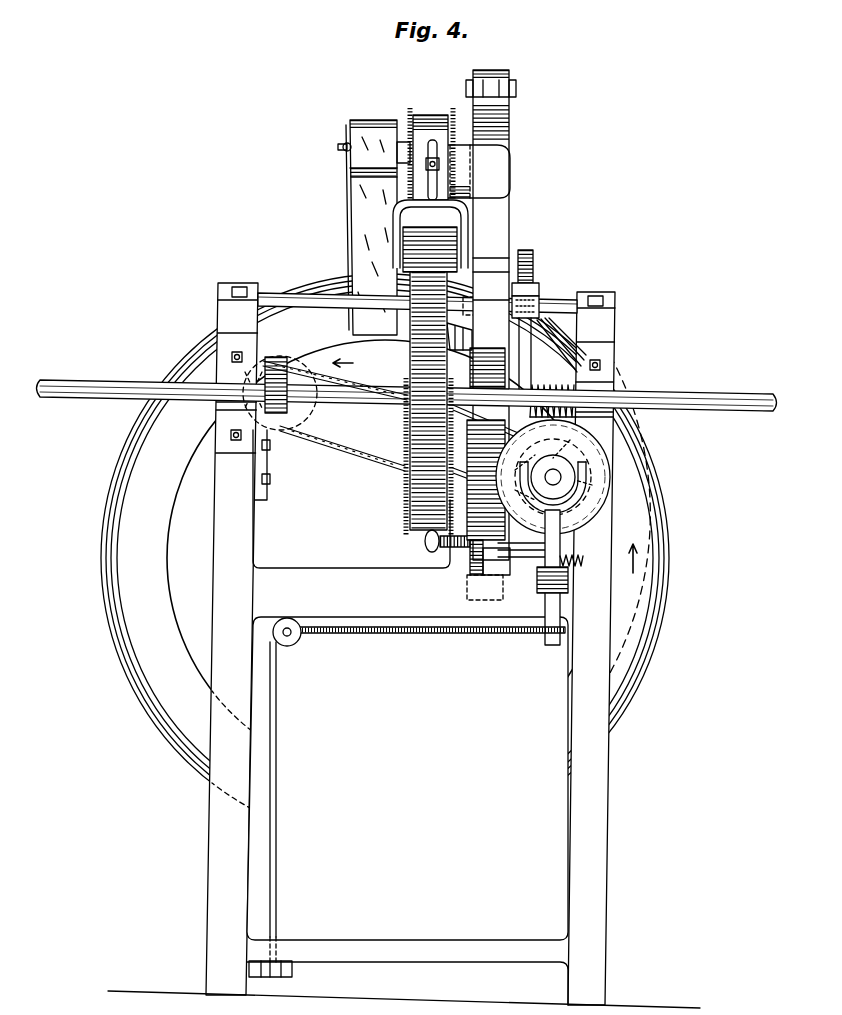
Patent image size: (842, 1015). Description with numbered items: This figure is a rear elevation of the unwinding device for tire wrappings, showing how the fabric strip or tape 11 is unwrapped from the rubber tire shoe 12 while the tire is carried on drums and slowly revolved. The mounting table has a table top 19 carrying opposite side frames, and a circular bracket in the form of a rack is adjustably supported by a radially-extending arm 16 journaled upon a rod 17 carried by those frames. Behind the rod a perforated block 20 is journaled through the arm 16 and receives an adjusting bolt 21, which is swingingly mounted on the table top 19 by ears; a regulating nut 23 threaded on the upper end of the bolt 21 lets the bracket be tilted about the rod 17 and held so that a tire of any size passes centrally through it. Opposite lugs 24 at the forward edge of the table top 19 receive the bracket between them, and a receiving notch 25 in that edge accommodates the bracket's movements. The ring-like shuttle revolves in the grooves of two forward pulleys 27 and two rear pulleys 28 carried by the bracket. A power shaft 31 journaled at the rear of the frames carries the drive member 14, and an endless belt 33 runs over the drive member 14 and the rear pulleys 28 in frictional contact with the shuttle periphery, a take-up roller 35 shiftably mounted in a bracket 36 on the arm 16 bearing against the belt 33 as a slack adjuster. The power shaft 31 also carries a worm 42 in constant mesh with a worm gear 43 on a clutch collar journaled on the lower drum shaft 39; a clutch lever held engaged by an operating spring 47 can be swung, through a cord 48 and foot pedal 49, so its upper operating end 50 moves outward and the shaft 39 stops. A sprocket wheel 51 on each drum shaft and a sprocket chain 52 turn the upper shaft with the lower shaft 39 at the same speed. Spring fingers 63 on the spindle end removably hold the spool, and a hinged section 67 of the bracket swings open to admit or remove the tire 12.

The fabric strip or tape 11 is at (352, 219).
The rubber tire shoe 12 is at (398, 835).
The drive member 14 is at (408, 361).
The radially-extending arm 16 is at (492, 136).
The rod 17 is at (262, 297).
The table top 19 is at (336, 568).
The perforated block 20 is at (543, 304).
The adjusting bolt 21 is at (528, 256).
The regulating nut 23 is at (542, 289).
The lugs 24 is at (516, 571).
The receiving notch 25 is at (480, 601).
The forward grooved pulleys 27 is at (352, 195).
The rear grooved pulleys 28 is at (427, 117).
The power shaft 31 is at (113, 384).
The endless belt 33 is at (425, 528).
The take-up roller 35 is at (446, 243).
The bracket 36 is at (478, 172).
The lower shaft 39 is at (562, 470).
The worm 42 is at (578, 398).
The worm gear 43 is at (600, 478).
The operating spring 47 is at (565, 594).
The cord 48 is at (392, 633).
The foot pedal 49 is at (290, 975).
The upper operating end 50 is at (556, 522).
The sprocket wheel 51 is at (300, 410).
The sprocket chain 52 is at (342, 452).
The spring fingers 63 is at (340, 147).
The hinged section 67 is at (499, 79).